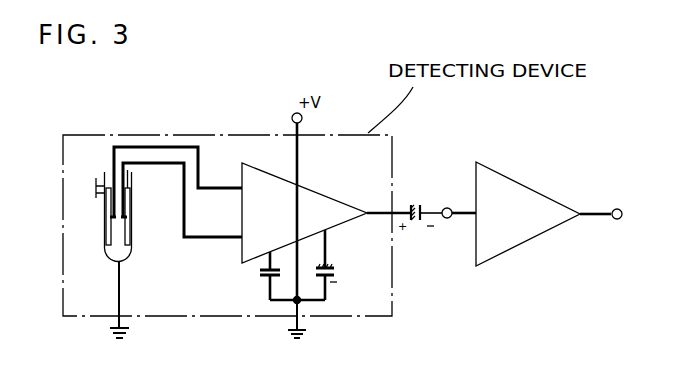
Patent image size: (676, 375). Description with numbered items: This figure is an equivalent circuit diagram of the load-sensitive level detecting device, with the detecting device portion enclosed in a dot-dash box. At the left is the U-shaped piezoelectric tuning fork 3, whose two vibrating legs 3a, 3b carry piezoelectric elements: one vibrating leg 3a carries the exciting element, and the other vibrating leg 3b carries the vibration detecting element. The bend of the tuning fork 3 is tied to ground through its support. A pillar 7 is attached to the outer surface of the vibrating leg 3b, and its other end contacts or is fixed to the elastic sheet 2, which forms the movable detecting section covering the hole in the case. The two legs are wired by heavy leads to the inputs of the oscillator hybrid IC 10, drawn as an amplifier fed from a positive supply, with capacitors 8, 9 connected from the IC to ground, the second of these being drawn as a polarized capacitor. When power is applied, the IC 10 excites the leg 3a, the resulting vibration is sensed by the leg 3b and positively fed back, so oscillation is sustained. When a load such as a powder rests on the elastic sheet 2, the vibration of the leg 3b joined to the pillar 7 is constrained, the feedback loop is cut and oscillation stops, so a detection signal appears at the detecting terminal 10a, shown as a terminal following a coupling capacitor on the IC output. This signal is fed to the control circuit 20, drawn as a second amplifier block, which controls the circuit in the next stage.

The elastic sheet 2 is at (96, 185).
The piezoelectric tuning fork 3 is at (110, 268).
The vibrating leg 3a is at (131, 180).
The vibrating leg 3b is at (105, 175).
The pillar 7 is at (100, 196).
The capacitor 8 is at (262, 272).
The capacitor 9 is at (340, 270).
The oscillator hybrid IC 10 is at (326, 206).
The detecting terminal 10a is at (447, 219).
The control circuit 20 is at (520, 188).